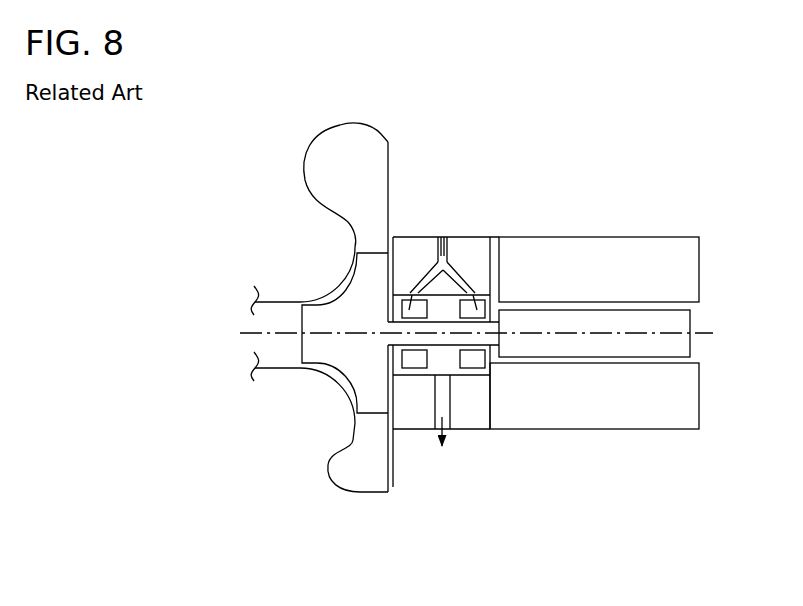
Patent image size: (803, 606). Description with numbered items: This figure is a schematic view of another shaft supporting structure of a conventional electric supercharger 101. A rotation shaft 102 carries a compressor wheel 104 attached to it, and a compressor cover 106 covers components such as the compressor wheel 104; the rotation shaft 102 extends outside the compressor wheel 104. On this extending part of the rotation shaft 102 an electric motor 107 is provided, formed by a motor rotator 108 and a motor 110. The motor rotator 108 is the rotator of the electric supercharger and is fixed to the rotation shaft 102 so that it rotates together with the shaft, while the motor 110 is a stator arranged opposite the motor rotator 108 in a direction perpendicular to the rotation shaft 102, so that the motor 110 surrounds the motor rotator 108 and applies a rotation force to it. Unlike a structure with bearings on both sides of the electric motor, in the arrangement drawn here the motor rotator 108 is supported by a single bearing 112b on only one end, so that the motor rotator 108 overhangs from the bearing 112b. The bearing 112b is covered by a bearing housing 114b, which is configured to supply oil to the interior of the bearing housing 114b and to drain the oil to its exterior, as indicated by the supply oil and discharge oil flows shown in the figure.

The electric supercharger 101 is at (641, 122).
The rotation shaft 102 is at (494, 320).
The compressor wheel 104 is at (373, 400).
The compressor cover 106 is at (333, 382).
The electric motor 107 is at (673, 221).
The motor rotator 108 is at (633, 347).
The motor 110 is at (577, 257).
The bearing 112b is at (487, 295).
The bearing housing 114b is at (475, 420).